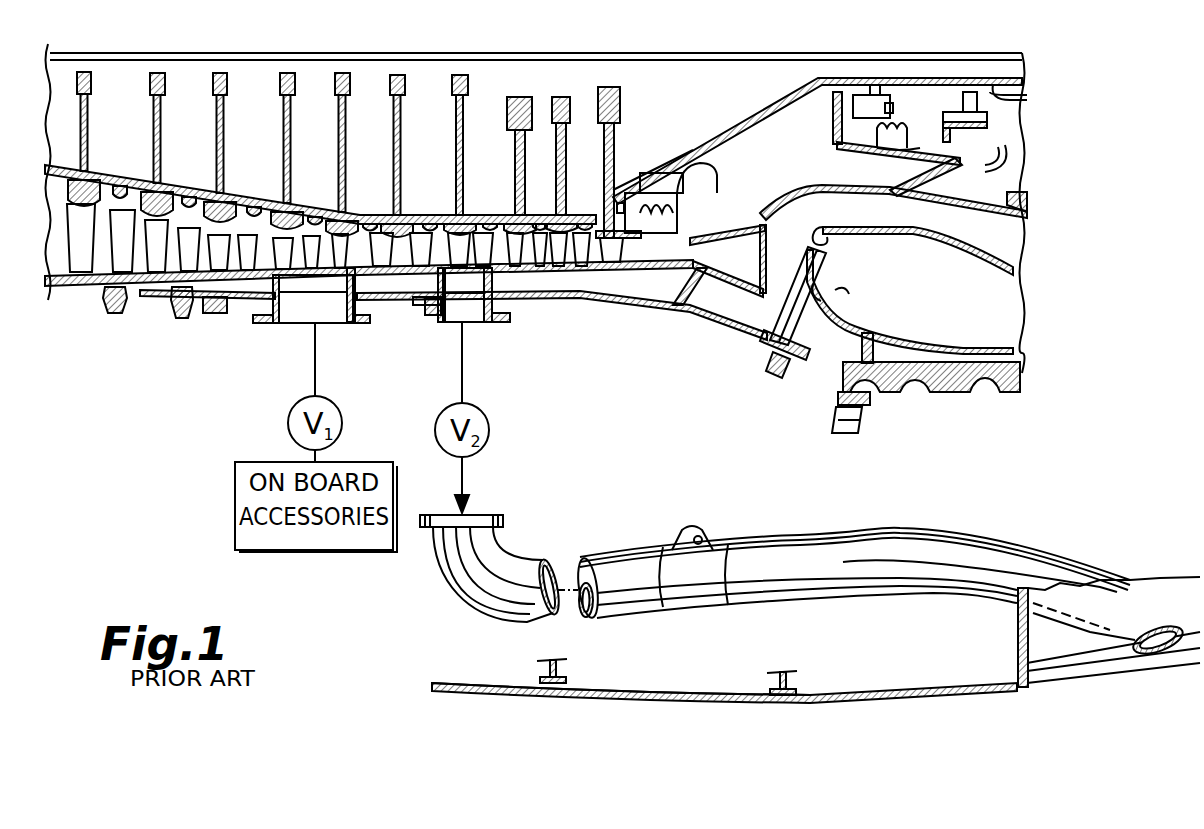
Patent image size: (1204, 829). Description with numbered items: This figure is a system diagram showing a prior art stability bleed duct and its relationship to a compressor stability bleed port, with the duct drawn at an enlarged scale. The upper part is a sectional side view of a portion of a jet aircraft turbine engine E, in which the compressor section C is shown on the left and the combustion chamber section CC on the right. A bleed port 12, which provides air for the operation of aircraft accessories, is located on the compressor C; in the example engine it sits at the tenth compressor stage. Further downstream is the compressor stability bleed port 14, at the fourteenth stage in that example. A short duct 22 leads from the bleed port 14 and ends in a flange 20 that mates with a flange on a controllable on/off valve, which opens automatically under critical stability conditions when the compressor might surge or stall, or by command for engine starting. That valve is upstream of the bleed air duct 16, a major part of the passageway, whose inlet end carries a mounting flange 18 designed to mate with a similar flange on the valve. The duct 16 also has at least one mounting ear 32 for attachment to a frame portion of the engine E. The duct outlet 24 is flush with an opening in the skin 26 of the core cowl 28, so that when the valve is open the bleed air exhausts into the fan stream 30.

The compressor section C is at (428, 118).
The jet aircraft turbine engine E is at (680, 327).
The combustion chamber section CC is at (950, 317).
The bleed port 12 is at (295, 283).
The compressor stability bleed port 14 is at (468, 283).
The bleed air duct 16 is at (840, 540).
The flanged elbow 18 is at (493, 515).
The flange 20 is at (441, 318).
The short duct 22 is at (433, 303).
The duct outlet 24 is at (1150, 657).
The skin 26 is at (648, 683).
The core cowl 28 is at (565, 712).
The fan stream 30 is at (1173, 660).
The mounting ear 32 is at (703, 527).